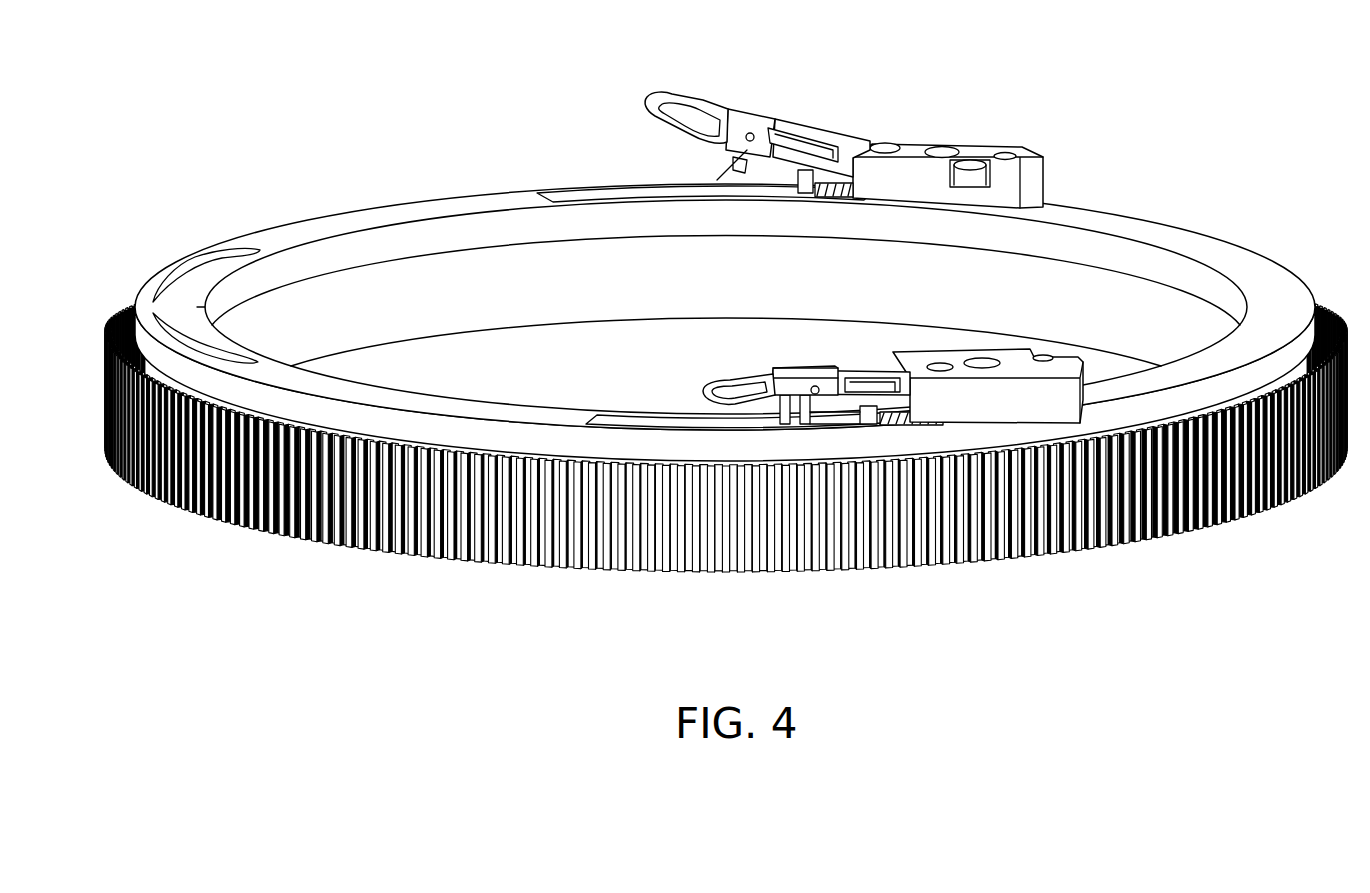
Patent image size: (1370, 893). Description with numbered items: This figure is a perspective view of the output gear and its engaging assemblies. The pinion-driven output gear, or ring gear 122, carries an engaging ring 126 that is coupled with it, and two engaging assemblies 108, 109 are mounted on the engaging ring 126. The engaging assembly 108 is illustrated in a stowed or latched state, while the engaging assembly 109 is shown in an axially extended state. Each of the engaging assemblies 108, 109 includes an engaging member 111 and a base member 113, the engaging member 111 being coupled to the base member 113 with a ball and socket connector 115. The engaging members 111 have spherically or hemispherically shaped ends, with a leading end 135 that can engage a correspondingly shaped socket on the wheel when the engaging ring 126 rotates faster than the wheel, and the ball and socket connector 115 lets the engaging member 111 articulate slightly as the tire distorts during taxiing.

The engaging assembly 108 is at (942, 141).
The engaging assembly 109 is at (1010, 400).
The engaging member 111 is at (814, 131).
The base member 113 is at (1018, 150).
The ball and socket connector 115 is at (876, 141).
The ring gear 122 is at (368, 547).
The engaging ring 126 is at (1182, 240).
The leading end 135 is at (650, 104).